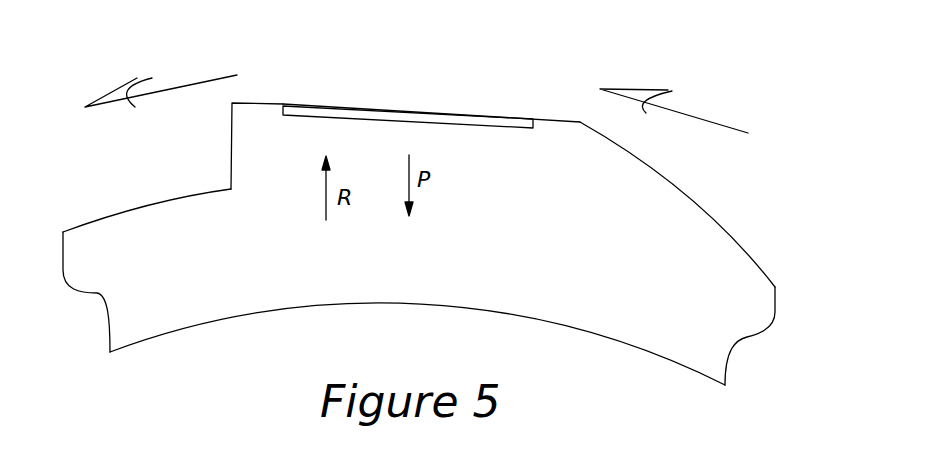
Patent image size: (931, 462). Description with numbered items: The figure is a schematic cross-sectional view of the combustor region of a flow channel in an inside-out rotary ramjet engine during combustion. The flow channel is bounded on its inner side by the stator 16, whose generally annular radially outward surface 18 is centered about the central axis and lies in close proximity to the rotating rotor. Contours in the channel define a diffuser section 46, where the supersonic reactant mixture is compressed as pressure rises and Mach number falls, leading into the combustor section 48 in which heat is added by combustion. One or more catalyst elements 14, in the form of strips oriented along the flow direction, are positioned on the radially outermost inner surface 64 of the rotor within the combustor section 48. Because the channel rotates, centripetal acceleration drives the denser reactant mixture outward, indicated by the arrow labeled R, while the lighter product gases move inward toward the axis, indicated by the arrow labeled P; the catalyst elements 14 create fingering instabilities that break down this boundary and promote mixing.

The catalyst element 14 is at (410, 110).
The stator 16 is at (140, 343).
The radially outward surface 18 is at (200, 325).
The diffuser section 46 is at (102, 220).
The combustor section 48 is at (282, 103).
The radially outermost inner surface 64 is at (622, 160).